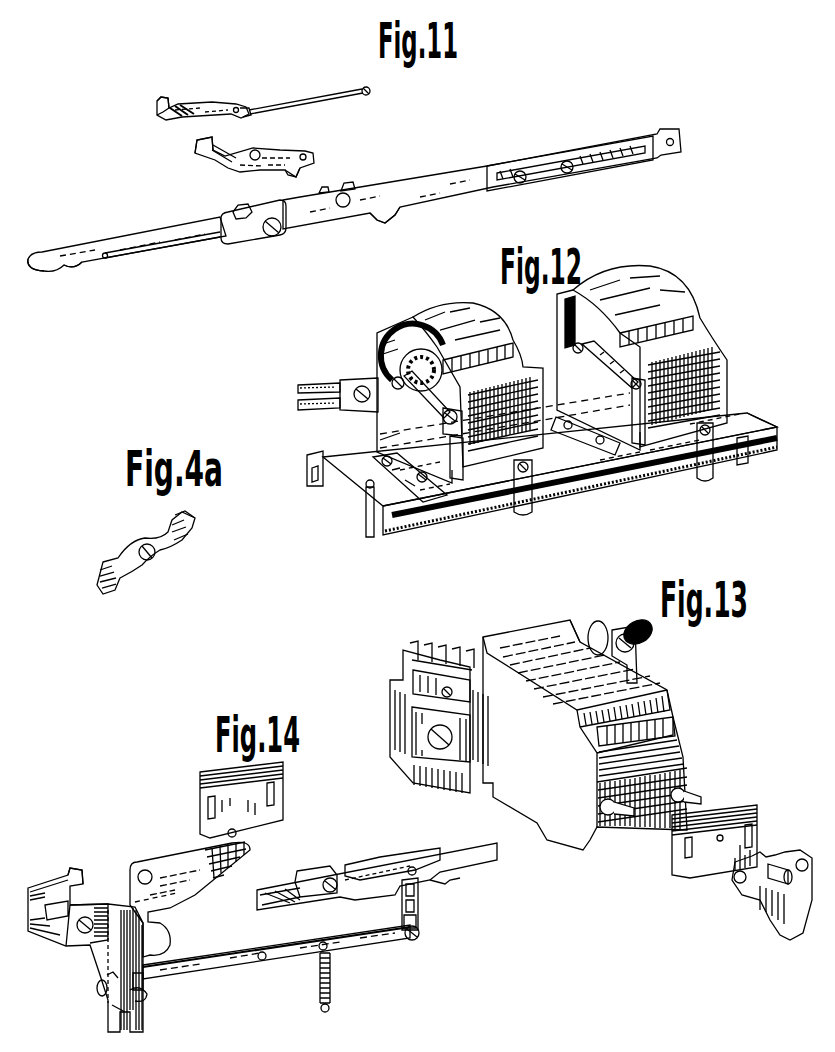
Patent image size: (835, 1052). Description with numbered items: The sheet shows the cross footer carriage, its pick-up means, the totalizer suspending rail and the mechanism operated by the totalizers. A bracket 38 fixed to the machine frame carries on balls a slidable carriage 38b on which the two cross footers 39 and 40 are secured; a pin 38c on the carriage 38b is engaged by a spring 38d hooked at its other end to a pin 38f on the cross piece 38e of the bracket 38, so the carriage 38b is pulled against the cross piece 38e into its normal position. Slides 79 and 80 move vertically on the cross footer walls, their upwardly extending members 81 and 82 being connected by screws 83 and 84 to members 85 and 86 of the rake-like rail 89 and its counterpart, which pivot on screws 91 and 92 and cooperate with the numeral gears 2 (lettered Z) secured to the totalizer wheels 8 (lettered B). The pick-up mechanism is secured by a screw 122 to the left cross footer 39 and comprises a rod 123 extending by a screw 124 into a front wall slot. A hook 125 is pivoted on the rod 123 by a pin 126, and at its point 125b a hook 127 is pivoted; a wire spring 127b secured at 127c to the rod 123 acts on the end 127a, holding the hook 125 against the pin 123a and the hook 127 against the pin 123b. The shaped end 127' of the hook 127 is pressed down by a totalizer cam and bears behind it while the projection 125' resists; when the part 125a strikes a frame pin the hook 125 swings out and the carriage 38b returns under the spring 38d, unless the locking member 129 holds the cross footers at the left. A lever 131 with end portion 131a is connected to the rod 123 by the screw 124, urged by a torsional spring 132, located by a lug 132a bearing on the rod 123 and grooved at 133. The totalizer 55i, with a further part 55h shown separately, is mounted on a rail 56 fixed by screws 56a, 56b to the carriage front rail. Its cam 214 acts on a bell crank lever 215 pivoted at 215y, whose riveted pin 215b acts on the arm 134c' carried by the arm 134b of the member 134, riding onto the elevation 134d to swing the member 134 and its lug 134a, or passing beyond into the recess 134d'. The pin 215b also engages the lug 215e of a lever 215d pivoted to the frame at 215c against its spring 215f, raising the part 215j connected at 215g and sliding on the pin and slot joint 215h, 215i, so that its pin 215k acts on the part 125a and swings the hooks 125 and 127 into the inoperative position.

In FIG. 11, the rod 123 is at (461, 196).
In FIG. 11, the pin 123a is at (383, 222).
In FIG. 11, the pin 123b is at (356, 188).
In FIG. 11, the screw 124 is at (272, 237).
In FIG. 11, the hook 125 is at (254, 165).
In FIG. 11, the projection of hook 125' is at (186, 146).
In FIG. 11, the part of hook 125a is at (294, 173).
In FIG. 14, the part of hook 125a is at (448, 881).
In FIG. 11, the pivot point of hook 125b is at (310, 158).
In FIG. 11, the pin 126 is at (344, 208).
In FIG. 11, the hook 127 is at (203, 100).
In FIG. 11, the end of hook 127' is at (147, 90).
In FIG. 11, the end of hook 127a is at (251, 112).
In FIG. 11, the wire spring 127b is at (312, 101).
In FIG. 11, the securing point of spring 127c is at (369, 92).
In FIG. 4A, the locking member 129 is at (145, 552).
In FIG. 11, the lever 131 is at (71, 246).
In FIG. 11, the rounded end of slide bar 131a is at (49, 270).
In FIG. 11, the torsional spring 132 is at (164, 252).
In FIG. 11, the lug 132a is at (234, 211).
In FIG. 11, the groove 133 is at (78, 268).
In FIG. 12, the bracket 38 is at (307, 468).
In FIG. 12, the carriage 38b is at (360, 491).
In FIG. 12, the pin 38c is at (366, 521).
In FIG. 12, the spring 38d is at (473, 517).
In FIG. 12, the cross piece 38e is at (748, 415).
In FIG. 12, the pin 38f is at (746, 455).
In FIG. 12, the cross footer 39 is at (478, 318).
In FIG. 12, the cross footer 40 is at (673, 283).
In FIG. 12, the slide 79 is at (525, 512).
In FIG. 12, the slide 80 is at (705, 479).
In FIG. 12, the upwardly extending member 81 is at (452, 459).
In FIG. 12, the upwardly extending member 82 is at (632, 418).
In FIG. 12, the screw 83 is at (447, 421).
In FIG. 12, the screw 84 is at (631, 385).
In FIG. 12, the member of rake-like rail 85 is at (392, 352).
In FIG. 12, the member of rake-like rail 86 is at (566, 326).
In FIG. 12, the rake-like rail 89 is at (395, 331).
In FIG. 12, the totalizer wheel 8 is at (430, 350).
In FIG. 12, the numeral gear 2 is at (418, 388).
In FIG. 12, the screw 91 is at (396, 390).
In FIG. 12, the screw 92 is at (578, 353).
In FIG. 12, the screw 122 is at (361, 403).
In FIG. 13, the totalizer 55i is at (668, 702).
In FIG. 13, the bracket 55h is at (786, 905).
In FIG. 13, the rail 56 is at (399, 684).
In FIG. 13, the screw 56a is at (428, 735).
In FIG. 13, the screw 56b is at (442, 694).
In FIG. 13, the cam 214 is at (680, 875).
In FIG. 14, the cam 214 is at (204, 812).
In FIG. 14, the bell crank lever 215 is at (193, 896).
In FIG. 14, the pivot 215y is at (145, 869).
In FIG. 14, the pin 215b is at (144, 976).
In FIG. 14, the connection point 215c is at (263, 961).
In FIG. 14, the lever 215d is at (233, 962).
In FIG. 14, the lug 215e is at (100, 985).
In FIG. 14, the spring 215f is at (331, 988).
In FIG. 14, the connection point 215g is at (414, 939).
In FIG. 14, the pin of pin and slot joint 215h is at (420, 892).
In FIG. 14, the slot of pin and slot joint 215i is at (418, 904).
In FIG. 14, the sliding part 215j is at (404, 913).
In FIG. 14, the pin 215k is at (415, 872).
In FIG. 14, the member 134 is at (46, 938).
In FIG. 14, the lug 134a is at (73, 872).
In FIG. 14, the arm 134b is at (98, 905).
In FIG. 14, the arm 134c' is at (86, 976).
In FIG. 14, the elevation 134d is at (161, 997).
In FIG. 14, the recess 134d' is at (93, 1017).